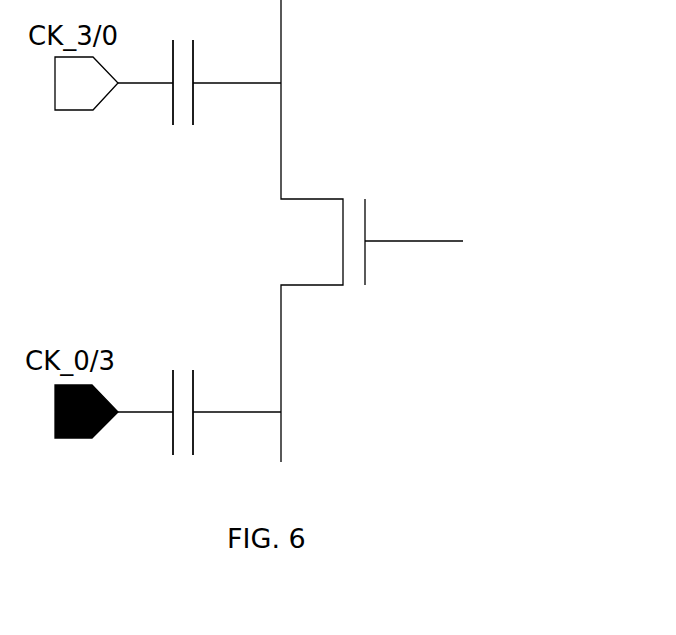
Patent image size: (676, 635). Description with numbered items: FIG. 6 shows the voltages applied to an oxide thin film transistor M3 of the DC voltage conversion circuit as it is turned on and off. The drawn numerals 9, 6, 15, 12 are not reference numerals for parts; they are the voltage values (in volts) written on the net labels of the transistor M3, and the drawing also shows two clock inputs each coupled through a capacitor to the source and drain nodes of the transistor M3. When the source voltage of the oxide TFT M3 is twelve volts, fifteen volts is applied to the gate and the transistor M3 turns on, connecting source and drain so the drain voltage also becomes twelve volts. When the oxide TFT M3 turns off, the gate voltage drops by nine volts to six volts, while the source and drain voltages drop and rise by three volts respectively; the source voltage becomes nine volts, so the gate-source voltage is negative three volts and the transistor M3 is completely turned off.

The oxide thin film transistor M3 is at (312, 231).
The net n12_ 9 is at (350, 91).
The gate net n15_ 6 is at (526, 249).
The net n12_ 15 is at (353, 421).
The coupling capacitors 12 is at (183, 247).